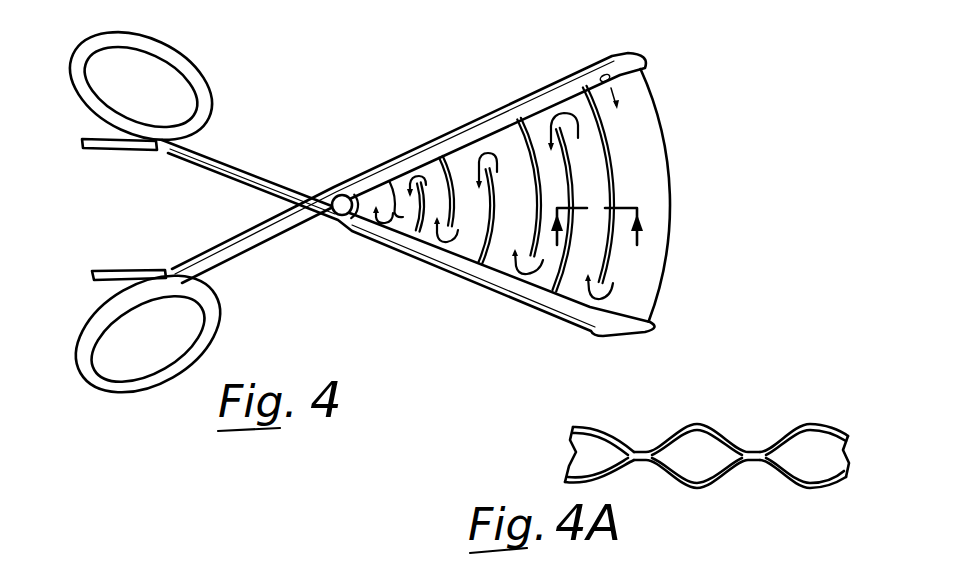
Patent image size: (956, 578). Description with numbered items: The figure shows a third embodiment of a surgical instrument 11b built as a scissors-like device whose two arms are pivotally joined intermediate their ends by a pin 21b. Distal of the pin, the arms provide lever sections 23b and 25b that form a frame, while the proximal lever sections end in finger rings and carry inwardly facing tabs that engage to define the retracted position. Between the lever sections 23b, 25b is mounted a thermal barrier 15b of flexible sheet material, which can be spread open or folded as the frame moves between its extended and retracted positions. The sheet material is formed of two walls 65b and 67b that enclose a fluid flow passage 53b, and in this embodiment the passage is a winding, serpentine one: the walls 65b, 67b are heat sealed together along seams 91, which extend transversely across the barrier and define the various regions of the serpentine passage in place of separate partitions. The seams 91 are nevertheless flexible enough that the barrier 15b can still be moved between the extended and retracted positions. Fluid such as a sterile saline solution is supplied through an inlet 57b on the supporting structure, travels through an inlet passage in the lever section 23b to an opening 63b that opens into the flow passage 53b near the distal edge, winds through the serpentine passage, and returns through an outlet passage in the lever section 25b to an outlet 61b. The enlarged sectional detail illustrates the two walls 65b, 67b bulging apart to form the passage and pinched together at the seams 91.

In FIG. 4, the surgical instrument 11b is at (396, 130).
In FIG. 4, the pin 21b is at (339, 195).
In FIG. 4, the lever section 23b is at (455, 133).
In FIG. 4, the lever section 25b is at (519, 292).
In FIG. 4, the thermal barrier 15b is at (647, 265).
In FIG. 4, the flow passage 53b is at (650, 143).
In FIG. 4A, the flow passage 53b is at (575, 452).
In FIG. 4, the opening 63b is at (602, 76).
In FIG. 4, the wall 65b is at (372, 222).
In FIG. 4A, the wall 65b is at (822, 423).
In FIG. 4A, the wall 67b is at (700, 483).
In FIG. 4, the seams 91 is at (490, 185).
In FIG. 4A, the seams 91 is at (643, 451).
In FIG. 4, the outlet 61b is at (82, 143).
In FIG. 4, the inlet 57b is at (90, 271).